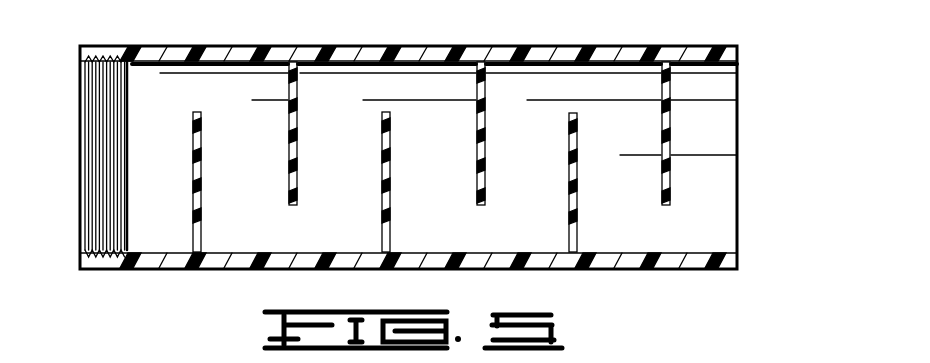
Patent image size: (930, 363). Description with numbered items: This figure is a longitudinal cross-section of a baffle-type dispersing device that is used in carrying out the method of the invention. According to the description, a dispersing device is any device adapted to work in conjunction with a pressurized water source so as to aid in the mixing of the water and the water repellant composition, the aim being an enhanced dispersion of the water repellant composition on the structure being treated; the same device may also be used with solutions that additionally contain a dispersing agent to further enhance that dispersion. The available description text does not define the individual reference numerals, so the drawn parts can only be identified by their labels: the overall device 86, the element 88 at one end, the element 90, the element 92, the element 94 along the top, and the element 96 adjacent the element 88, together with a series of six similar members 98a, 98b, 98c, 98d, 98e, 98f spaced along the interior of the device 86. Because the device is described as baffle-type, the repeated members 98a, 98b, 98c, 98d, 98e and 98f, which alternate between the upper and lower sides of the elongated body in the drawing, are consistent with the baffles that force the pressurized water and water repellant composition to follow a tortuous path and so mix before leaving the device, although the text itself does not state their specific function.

The housing 86 is at (740, 110).
The bellows 88 is at (82, 130).
The bottom wall 90 is at (738, 208).
The interior plate 92 is at (712, 191).
The top wall 94 is at (646, 46).
The bellows end plate 96 is at (97, 165).
The baffle plate 98a is at (299, 142).
The baffle plate 98b is at (203, 149).
The baffle plate 98c is at (487, 140).
The baffle plate 98d is at (393, 148).
The baffle plate 98e is at (672, 146).
The baffle plate 98f is at (580, 136).